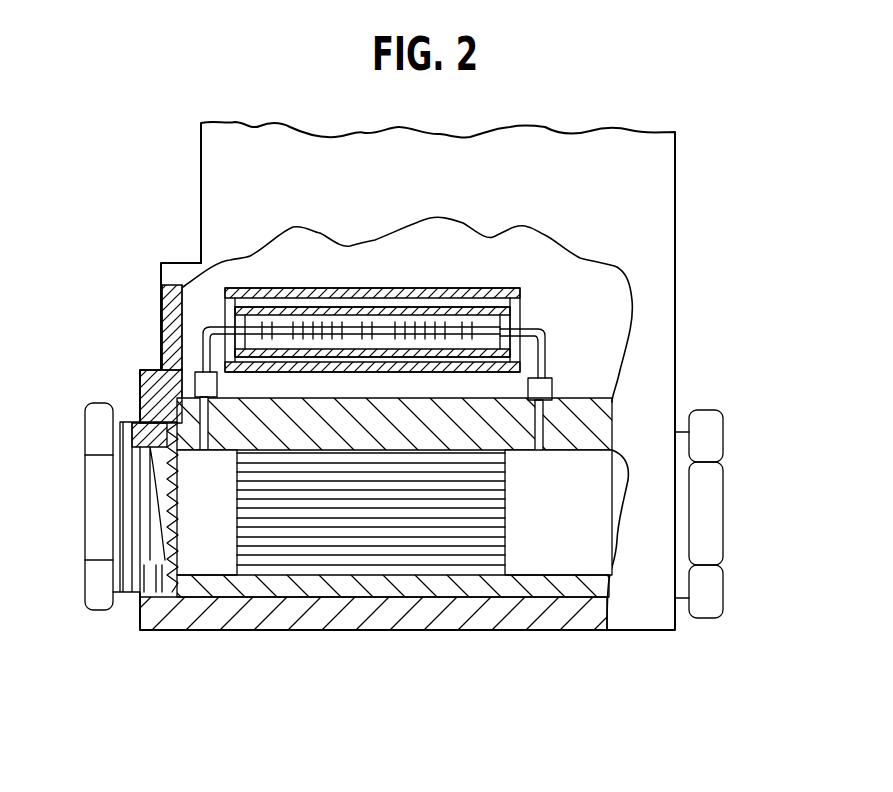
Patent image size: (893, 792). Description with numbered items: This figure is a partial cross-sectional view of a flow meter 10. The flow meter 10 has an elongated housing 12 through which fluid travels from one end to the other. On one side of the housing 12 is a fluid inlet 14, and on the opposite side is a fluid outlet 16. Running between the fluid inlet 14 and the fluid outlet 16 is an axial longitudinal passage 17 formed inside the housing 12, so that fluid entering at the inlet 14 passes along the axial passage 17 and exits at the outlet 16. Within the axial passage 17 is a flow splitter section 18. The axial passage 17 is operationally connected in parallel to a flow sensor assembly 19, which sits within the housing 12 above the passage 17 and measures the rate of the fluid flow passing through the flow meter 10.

The flow meter 10 is at (725, 260).
The elongated housing 12 is at (208, 186).
The fluid inlet 14 is at (93, 418).
The fluid outlet 16 is at (712, 432).
The axial longitudinal passage 17 is at (538, 509).
The flow splitter section 18 is at (232, 537).
The flow sensor assembly 19 is at (415, 288).